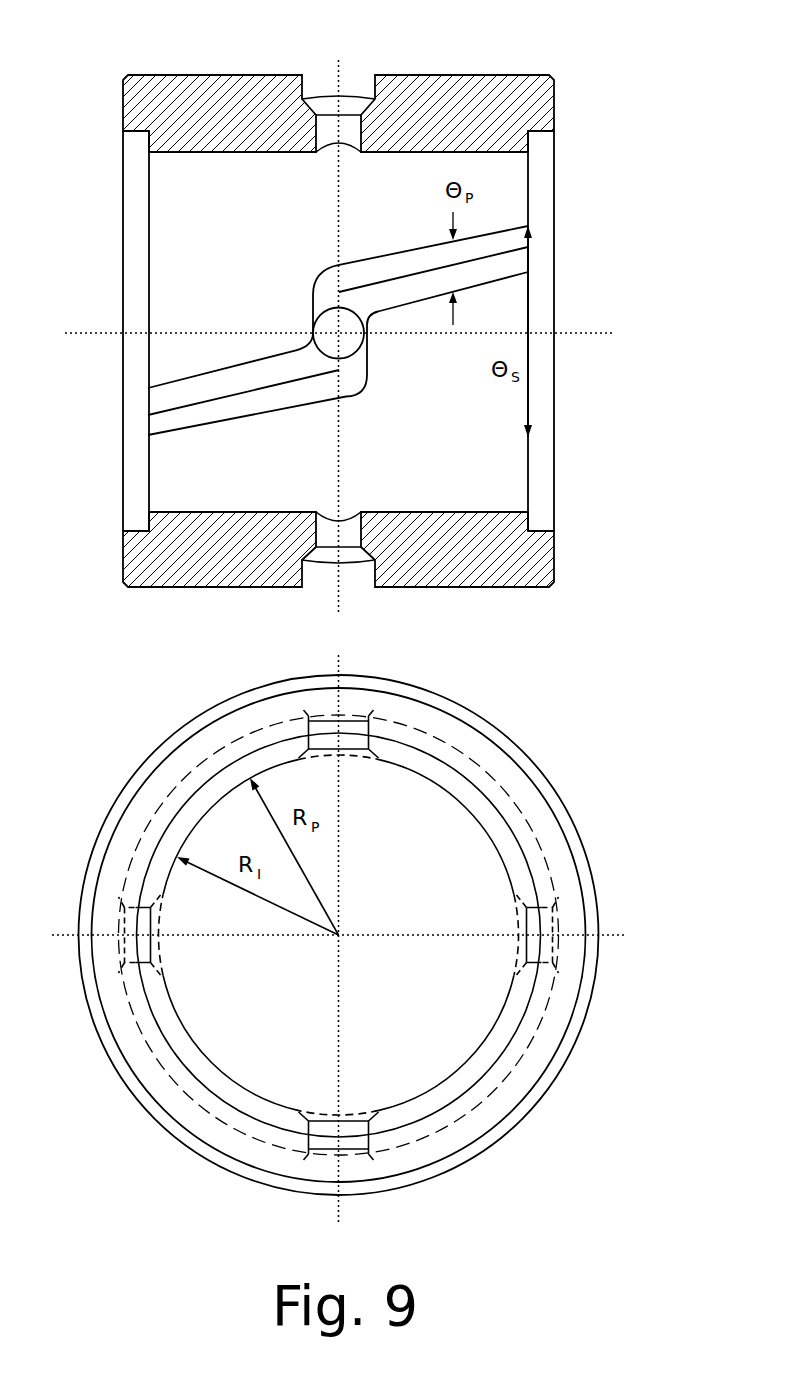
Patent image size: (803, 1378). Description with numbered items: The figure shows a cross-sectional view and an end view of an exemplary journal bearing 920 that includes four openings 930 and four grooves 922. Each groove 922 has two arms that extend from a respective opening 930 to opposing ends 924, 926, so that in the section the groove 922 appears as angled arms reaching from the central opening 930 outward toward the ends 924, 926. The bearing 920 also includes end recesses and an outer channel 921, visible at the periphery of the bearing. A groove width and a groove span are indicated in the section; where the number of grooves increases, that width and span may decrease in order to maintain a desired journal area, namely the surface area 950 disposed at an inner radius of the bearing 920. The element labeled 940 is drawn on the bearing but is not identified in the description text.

The journal bearing 920 is at (624, 53).
The outer channel 921 is at (303, 77).
The groove 922 is at (313, 286).
The opposing end 924 is at (147, 406).
The opposing end 926 is at (528, 247).
The opening 930 is at (357, 98).
The flange 940 is at (192, 75).
The surface area 950 is at (220, 152).